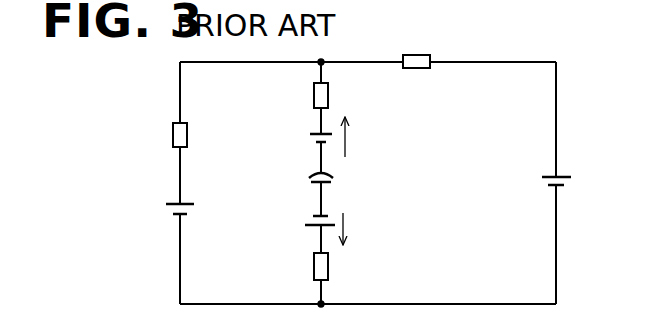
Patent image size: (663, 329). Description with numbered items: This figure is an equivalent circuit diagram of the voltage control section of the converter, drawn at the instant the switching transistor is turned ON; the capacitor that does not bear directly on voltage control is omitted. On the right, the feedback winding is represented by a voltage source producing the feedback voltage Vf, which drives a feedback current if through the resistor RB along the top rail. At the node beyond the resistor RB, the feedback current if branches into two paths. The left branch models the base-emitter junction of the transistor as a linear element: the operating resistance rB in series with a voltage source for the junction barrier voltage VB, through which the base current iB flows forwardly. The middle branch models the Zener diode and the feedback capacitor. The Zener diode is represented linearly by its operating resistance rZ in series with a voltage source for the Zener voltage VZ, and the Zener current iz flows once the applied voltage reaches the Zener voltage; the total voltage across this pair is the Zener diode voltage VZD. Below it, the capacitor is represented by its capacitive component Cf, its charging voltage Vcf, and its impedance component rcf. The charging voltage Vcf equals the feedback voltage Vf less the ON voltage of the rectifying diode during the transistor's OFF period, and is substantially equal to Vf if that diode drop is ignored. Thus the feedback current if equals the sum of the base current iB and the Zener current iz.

The operating resistance of the transistor rB is at (194, 136).
The junction barrier voltage VB is at (195, 206).
The operating resistance of the Zener diode rZ is at (333, 98).
The Zener voltage VZ is at (343, 137).
The capacitive component Cf is at (332, 179).
The charging voltage Vcf is at (342, 229).
The impedance component rcf is at (335, 268).
The resistor RB is at (416, 47).
The feedback voltage Vf is at (565, 176).
The base current iB is at (203, 84).
The feedback current if is at (380, 43).
The Zener current iz is at (296, 110).
The Zener diode voltage VZD is at (389, 90).